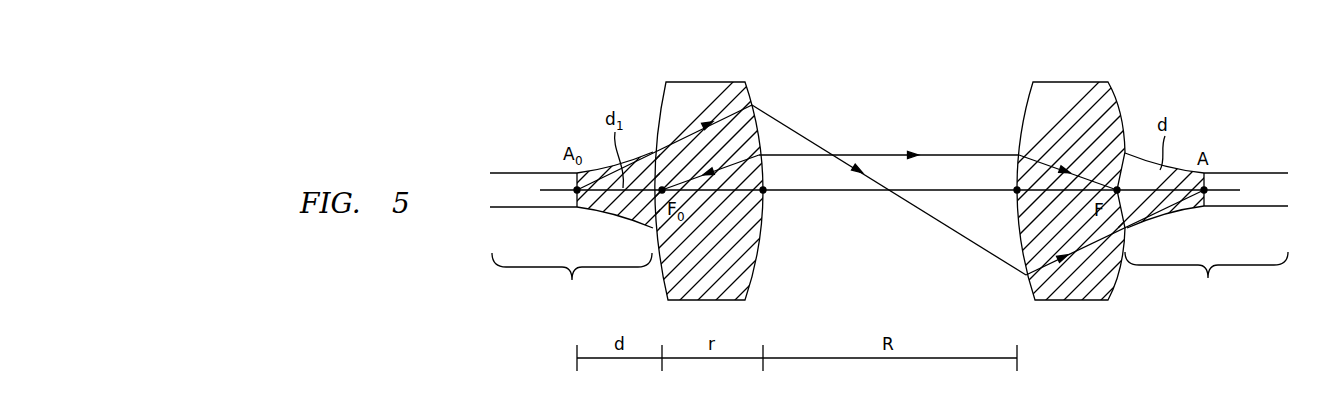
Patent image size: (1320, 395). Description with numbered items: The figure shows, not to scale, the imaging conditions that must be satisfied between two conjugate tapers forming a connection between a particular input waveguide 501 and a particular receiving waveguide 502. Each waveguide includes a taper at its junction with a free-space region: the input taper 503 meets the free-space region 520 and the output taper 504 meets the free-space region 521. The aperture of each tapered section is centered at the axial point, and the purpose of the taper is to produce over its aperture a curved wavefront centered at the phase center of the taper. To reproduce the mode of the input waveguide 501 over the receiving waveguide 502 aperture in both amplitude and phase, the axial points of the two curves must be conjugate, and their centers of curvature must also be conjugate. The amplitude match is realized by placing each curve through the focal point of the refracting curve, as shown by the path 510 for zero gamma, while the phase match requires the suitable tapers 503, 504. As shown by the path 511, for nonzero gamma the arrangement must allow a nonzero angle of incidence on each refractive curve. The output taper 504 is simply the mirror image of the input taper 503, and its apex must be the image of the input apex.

The input waveguide 501 is at (571, 242).
The receiving waveguide 502 is at (1206, 241).
The input taper 503 is at (618, 210).
The output taper 504 is at (1158, 205).
The focal-point ray path 510 is at (812, 192).
The oblique ray path 511 is at (875, 153).
The free-space region 520 is at (700, 82).
The free-space region 521 is at (1080, 80).